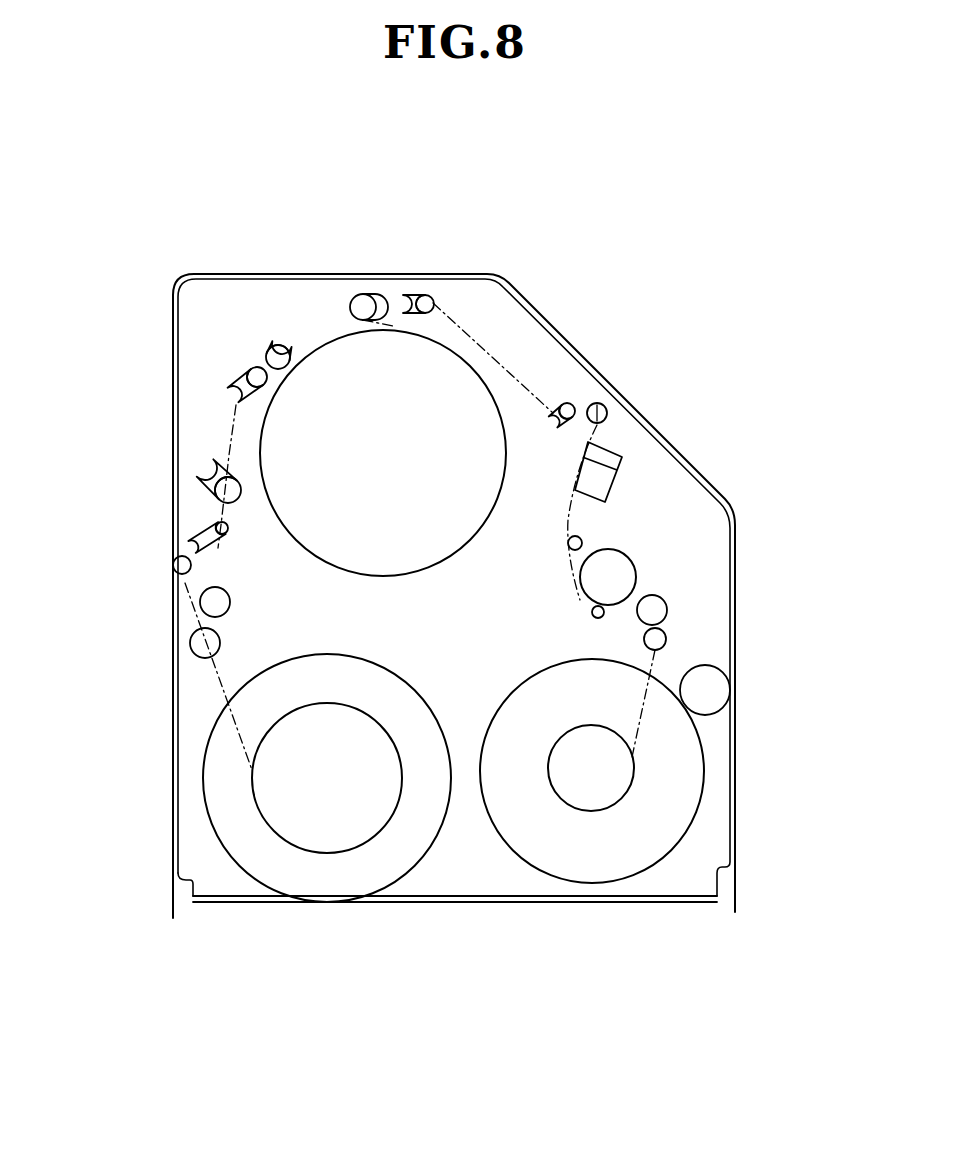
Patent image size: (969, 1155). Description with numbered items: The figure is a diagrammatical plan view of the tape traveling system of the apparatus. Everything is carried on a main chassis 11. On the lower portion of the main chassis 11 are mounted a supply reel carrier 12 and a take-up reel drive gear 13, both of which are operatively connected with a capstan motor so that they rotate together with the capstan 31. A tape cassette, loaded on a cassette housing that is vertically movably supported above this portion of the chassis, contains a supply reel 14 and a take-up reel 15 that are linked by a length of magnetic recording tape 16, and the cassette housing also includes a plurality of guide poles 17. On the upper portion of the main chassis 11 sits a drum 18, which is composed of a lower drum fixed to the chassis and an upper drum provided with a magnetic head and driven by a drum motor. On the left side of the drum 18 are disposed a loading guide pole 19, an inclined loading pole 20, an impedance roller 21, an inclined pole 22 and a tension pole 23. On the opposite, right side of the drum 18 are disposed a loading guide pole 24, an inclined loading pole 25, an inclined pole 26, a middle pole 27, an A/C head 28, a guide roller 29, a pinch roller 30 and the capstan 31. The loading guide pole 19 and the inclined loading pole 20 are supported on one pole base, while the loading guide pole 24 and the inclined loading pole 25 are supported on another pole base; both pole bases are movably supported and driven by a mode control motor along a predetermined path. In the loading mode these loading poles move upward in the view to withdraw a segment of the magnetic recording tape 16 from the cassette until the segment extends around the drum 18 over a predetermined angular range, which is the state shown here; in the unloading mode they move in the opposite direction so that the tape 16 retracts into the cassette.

The main chassis 11 is at (522, 320).
The supply reel carrier 12 is at (278, 878).
The take-up reel drive gear 13 is at (720, 693).
The supply reel 14 is at (353, 818).
The take-up reel 15 is at (587, 787).
The magnetic recording tape 16 is at (233, 440).
The guide poles 17 is at (207, 645).
The drum 18 is at (405, 537).
The loading guide pole 19 is at (280, 337).
The inclined loading pole 20 is at (248, 372).
The impedance roller 21 is at (207, 475).
The inclined pole 22 is at (215, 527).
The tension pole 23 is at (173, 573).
The loading guide pole 24 is at (363, 294).
The inclined loading pole 25 is at (415, 294).
The inclined pole 26 is at (570, 404).
The middle pole 27 is at (600, 403).
The A/C head 28 is at (605, 476).
The guide roller 29 is at (568, 548).
The pinch roller 30 is at (627, 575).
The capstan 31 is at (597, 615).